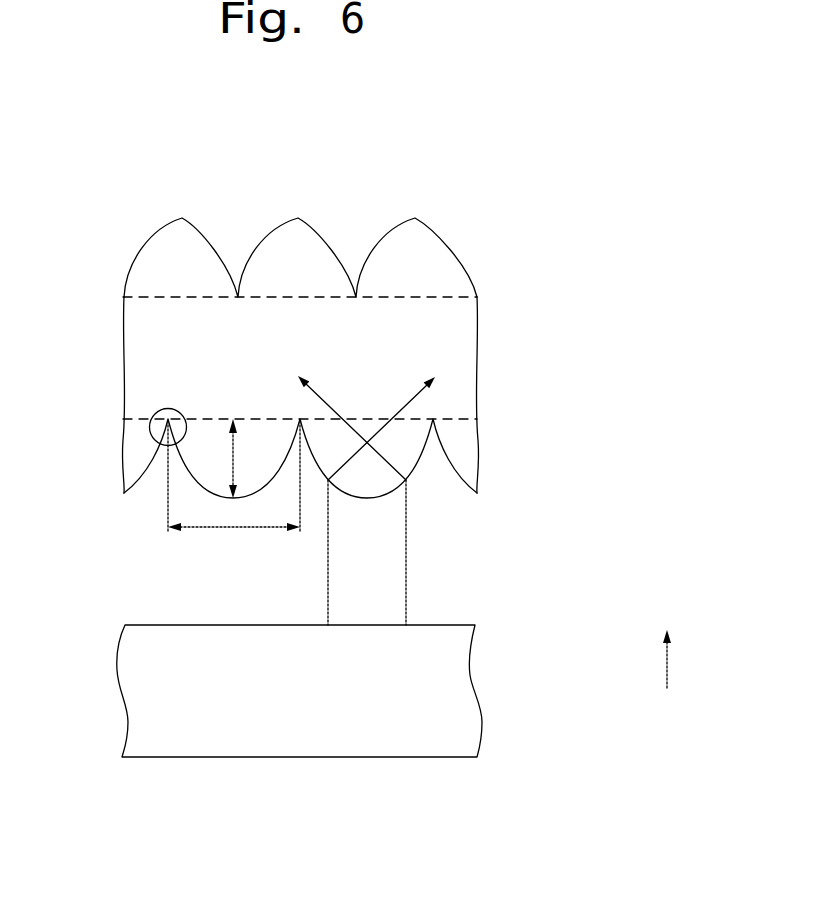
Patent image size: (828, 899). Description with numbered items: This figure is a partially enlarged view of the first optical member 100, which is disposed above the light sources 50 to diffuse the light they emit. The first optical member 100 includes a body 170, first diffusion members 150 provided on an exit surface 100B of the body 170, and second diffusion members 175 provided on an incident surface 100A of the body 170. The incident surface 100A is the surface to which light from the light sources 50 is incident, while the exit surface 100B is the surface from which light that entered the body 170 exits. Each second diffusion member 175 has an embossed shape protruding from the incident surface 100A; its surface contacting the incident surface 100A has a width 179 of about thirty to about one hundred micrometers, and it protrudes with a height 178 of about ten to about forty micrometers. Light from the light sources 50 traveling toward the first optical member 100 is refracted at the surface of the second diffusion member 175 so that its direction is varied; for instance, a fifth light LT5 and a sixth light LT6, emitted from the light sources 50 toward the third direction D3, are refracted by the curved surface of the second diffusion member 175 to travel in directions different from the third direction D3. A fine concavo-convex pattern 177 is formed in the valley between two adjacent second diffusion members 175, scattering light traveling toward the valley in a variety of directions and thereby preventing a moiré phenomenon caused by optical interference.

The first optical member 100 is at (121, 215).
The first diffusion member 150 is at (437, 238).
The body 170 is at (462, 360).
The second diffusion member 175 is at (470, 494).
The fine concavo-convex pattern 177 is at (150, 426).
The height 178 is at (231, 444).
The width 179 is at (234, 531).
The incident surface 100A is at (446, 419).
The exit surface 100B is at (446, 297).
The fifth light LT5 is at (328, 551).
The sixth light LT6 is at (406, 551).
The light source 50 is at (463, 690).
The third direction D3 is at (666, 644).